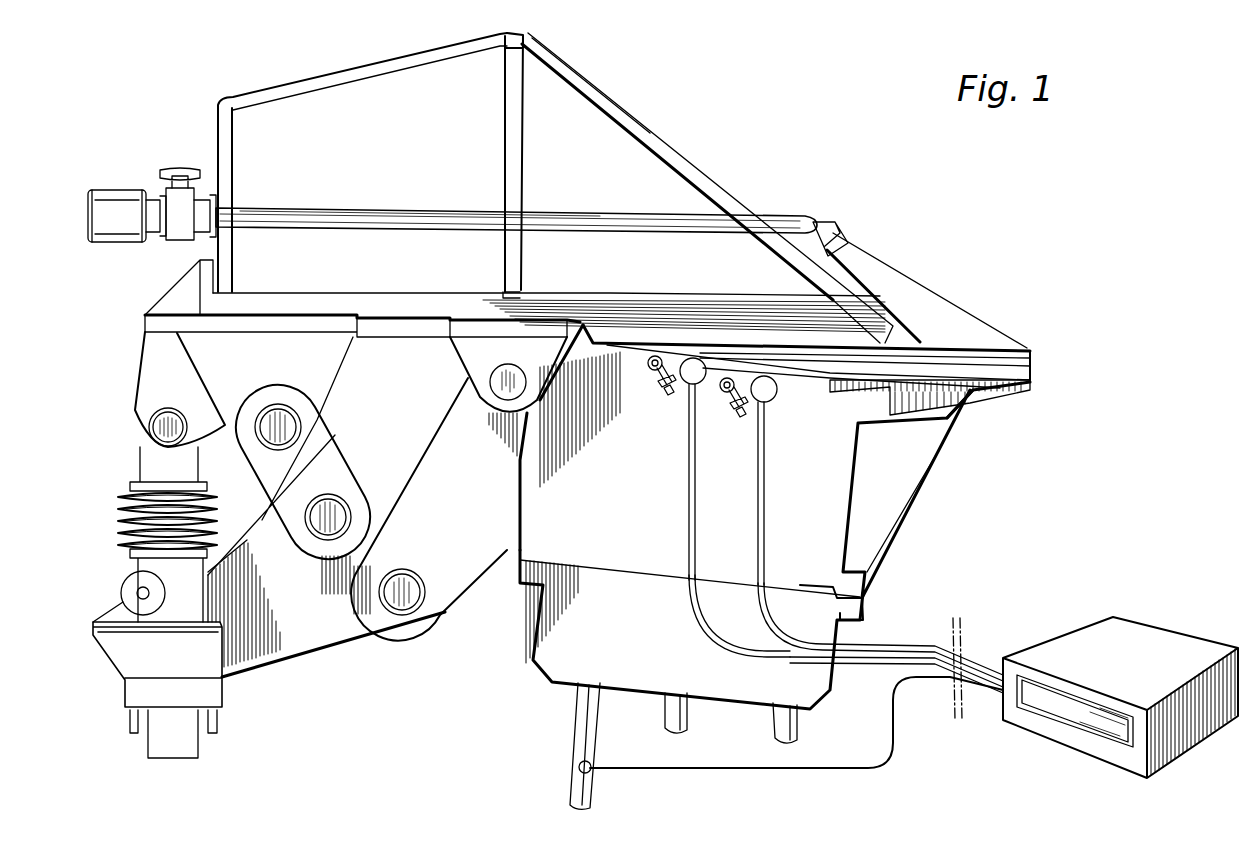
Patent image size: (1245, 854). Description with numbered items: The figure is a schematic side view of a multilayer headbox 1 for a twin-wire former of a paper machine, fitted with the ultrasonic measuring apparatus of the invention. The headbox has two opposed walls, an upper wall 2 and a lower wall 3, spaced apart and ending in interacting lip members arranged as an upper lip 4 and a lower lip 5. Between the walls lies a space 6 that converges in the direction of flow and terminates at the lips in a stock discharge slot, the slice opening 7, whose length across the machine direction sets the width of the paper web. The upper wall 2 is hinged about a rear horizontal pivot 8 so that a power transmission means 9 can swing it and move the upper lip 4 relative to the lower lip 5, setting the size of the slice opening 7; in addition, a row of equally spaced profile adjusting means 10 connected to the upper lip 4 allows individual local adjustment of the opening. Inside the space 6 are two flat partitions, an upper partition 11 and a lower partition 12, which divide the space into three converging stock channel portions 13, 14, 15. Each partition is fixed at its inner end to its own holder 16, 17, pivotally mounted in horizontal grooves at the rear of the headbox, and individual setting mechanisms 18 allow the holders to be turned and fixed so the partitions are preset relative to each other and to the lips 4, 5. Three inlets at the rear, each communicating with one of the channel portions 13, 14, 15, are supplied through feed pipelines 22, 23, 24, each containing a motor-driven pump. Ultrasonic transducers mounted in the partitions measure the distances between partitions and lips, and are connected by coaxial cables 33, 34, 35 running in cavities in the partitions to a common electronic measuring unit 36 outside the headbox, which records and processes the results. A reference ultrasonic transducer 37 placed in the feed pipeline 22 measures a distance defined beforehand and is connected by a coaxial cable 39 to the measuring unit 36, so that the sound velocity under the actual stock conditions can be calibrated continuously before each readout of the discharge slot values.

The multilayer headbox 1 is at (840, 512).
The upper wall 2 is at (743, 337).
The lower wall 3 is at (872, 440).
The upper lip 4 is at (1010, 352).
The lower lip 5 is at (997, 393).
The converging space 6 is at (760, 355).
The slice opening 7 is at (1052, 356).
The pivot 8 is at (492, 388).
The power transmission means 9 is at (213, 688).
The profile adjusting means 10 is at (940, 322).
The upper partition 11 is at (973, 362).
The lower partition 12 is at (953, 377).
The outer channel portion 13 is at (870, 357).
The middle channel portion 14 is at (902, 370).
The outer channel portion 15 is at (860, 388).
The holder 16 is at (690, 358).
The holder 17 is at (777, 397).
The setting mechanism 18 is at (648, 358).
The feed pipeline 22 is at (578, 723).
The feed pipeline 23 is at (668, 722).
The feed pipeline 24 is at (776, 727).
The coaxial cable 33 is at (817, 700).
The coaxial cable 34 is at (773, 657).
The coaxial cable 35 is at (800, 628).
The electronic measuring unit 36 is at (1140, 630).
The reference ultrasonic transducer 37 is at (580, 768).
The coaxial cable 39 is at (672, 770).